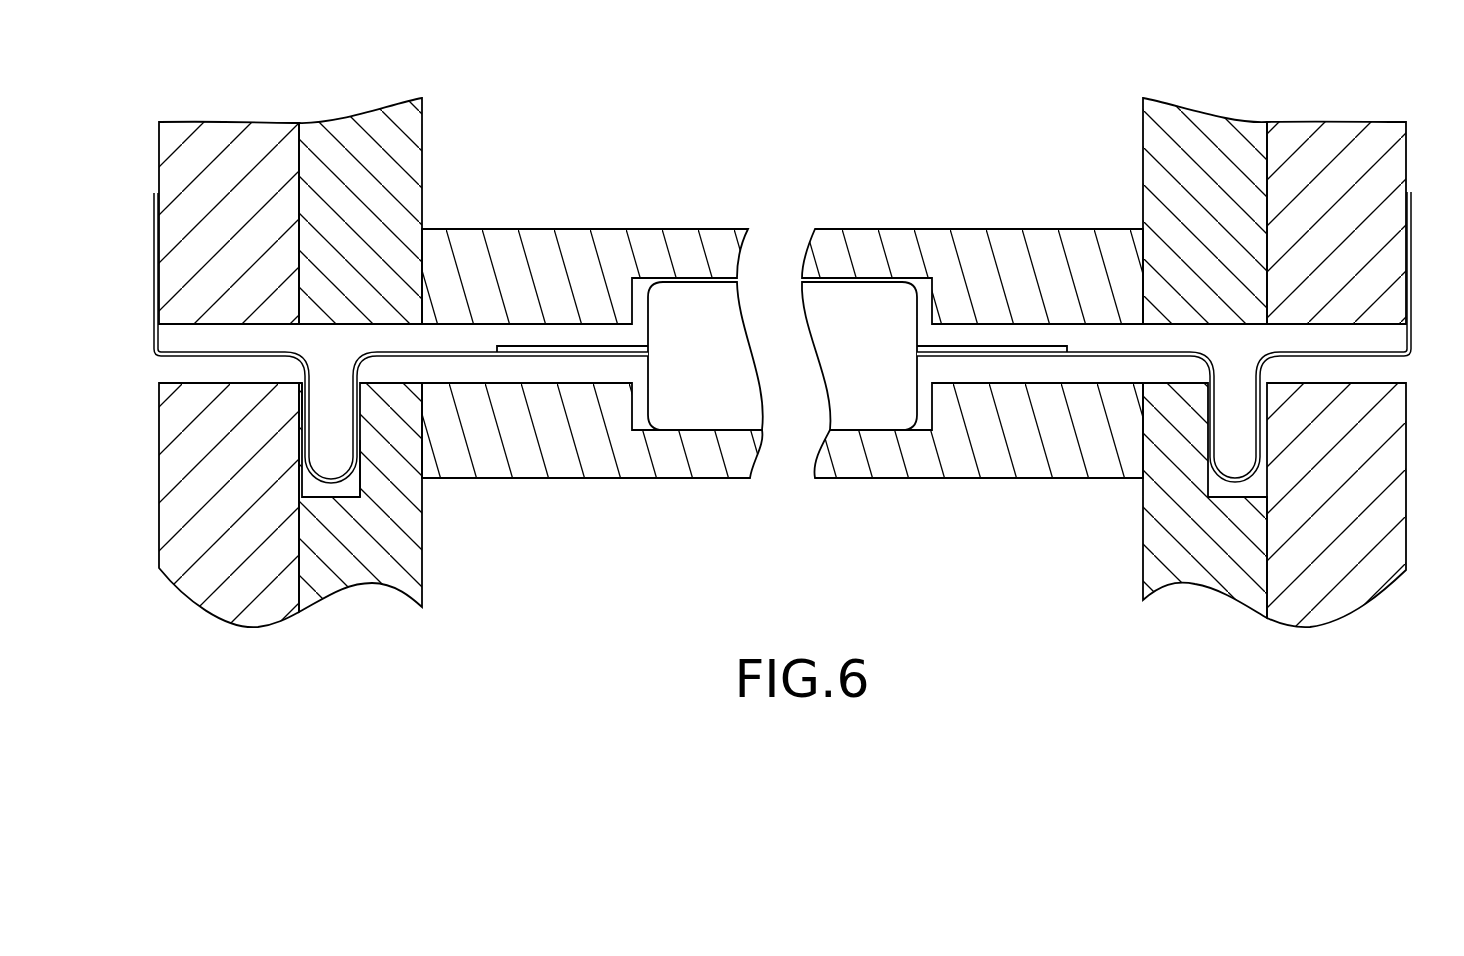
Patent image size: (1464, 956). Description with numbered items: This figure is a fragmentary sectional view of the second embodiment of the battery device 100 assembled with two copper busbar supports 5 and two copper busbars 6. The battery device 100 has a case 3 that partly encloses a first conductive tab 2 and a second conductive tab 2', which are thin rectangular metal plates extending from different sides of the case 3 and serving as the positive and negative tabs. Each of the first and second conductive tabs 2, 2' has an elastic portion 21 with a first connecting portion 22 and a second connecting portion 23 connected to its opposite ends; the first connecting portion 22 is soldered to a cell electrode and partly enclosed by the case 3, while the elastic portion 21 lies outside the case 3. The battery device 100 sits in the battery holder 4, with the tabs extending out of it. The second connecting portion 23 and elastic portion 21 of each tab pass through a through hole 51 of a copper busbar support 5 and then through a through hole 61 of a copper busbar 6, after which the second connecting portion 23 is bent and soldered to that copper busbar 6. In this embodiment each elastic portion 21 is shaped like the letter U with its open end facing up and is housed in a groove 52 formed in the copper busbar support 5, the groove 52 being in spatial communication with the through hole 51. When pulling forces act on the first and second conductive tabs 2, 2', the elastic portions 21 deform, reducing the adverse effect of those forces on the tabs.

The first conductive tab 2 is at (1156, 284).
The second conductive tab 2' is at (409, 291).
The elastic portion 21 is at (330, 483).
The first connecting portion 22 is at (453, 357).
The second connecting portion 23 is at (155, 222).
The case 3 is at (712, 281).
The battery device 100 is at (681, 281).
The battery holder 4 is at (588, 229).
The copper busbar support 5 is at (356, 140).
The through hole 51 is at (376, 345).
The groove 52 is at (348, 485).
The copper busbar 6 is at (224, 142).
The through hole 61 is at (180, 373).